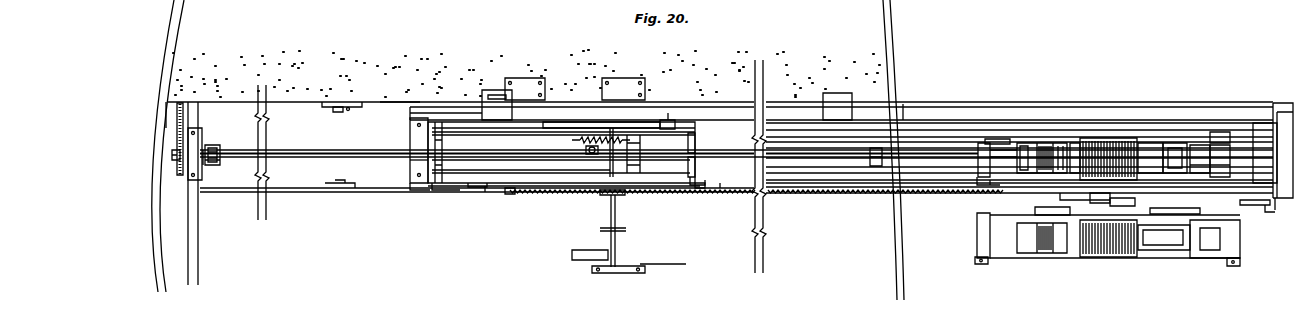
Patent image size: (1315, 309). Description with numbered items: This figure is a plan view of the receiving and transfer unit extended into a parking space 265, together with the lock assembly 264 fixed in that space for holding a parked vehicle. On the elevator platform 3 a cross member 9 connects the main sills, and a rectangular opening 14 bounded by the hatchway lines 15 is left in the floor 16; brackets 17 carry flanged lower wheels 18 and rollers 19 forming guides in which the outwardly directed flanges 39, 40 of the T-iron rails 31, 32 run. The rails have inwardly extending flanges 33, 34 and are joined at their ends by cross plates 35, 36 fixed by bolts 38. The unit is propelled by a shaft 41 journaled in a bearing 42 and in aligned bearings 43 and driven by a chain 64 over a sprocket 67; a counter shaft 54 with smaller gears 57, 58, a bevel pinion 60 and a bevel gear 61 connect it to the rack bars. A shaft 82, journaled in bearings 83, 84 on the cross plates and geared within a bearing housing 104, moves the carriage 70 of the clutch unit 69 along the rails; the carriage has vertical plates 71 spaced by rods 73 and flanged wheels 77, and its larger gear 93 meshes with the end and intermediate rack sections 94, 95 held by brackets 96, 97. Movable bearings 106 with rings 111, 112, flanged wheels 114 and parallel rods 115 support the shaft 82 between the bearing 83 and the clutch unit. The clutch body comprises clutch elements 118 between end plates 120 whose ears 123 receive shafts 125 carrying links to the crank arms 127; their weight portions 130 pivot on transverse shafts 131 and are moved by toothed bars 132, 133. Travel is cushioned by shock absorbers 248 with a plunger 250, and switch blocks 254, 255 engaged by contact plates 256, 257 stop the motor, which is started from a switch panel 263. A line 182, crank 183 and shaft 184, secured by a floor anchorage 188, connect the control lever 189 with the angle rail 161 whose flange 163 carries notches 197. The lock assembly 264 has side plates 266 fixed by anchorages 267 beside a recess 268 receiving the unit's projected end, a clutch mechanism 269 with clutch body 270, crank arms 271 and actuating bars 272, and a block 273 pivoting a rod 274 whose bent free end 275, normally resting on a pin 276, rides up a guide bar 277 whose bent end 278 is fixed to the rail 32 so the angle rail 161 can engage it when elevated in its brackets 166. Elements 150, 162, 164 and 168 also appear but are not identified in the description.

The platform 3 is at (172, 66).
The cross member 9 is at (198, 252).
The rectangularly-shaped opening 14 is at (166, 124).
The hatchway lines 15 is at (158, 252).
The floor 16 is at (397, 90).
The brackets 17 is at (330, 105).
The flanged lower wheels 18 is at (337, 112).
The rollers 19 is at (348, 112).
The T-iron rail 31 is at (468, 104).
The T-iron rail 32 is at (455, 187).
The inwardly extending flange 33 is at (485, 128).
The inwardly extending flange 34 is at (440, 190).
The cross plate 35 is at (412, 178).
The cross plate 36 is at (1270, 135).
The bolts 38 is at (1266, 120).
The outwardly directed flange 39 is at (445, 103).
The outwardly directed flange 40 is at (412, 186).
The shaft 41 is at (312, 160).
The bearing 42 is at (190, 180).
The bearings 43 is at (574, 160).
The counter shaft 54 is at (641, 166).
The smaller gear 57 is at (614, 141).
The smaller gear 58 is at (580, 141).
The bevel pinion 60 is at (593, 155).
The bevel gear 61 is at (556, 152).
The chain 64 is at (176, 150).
The sprocket 67 is at (172, 166).
The clutch unit 69 is at (1104, 138).
The carriage 70 is at (990, 139).
The plates 71 is at (1028, 146).
The rods 73 is at (980, 150).
The flanged wheels 77 is at (1225, 132).
The shaft 82 is at (476, 162).
The bearing 83 is at (413, 146).
The bearing 84 is at (1277, 150).
The gear 93 is at (1140, 143).
The end rack section 94 is at (1165, 143).
The intermediate rack section 95 is at (870, 126).
The bracket 96 is at (543, 127).
The bracket 97 is at (664, 120).
The bearing housing 104 is at (443, 139).
The movable bearings 106 is at (700, 188).
The ring 111 is at (688, 162).
The ring 112 is at (688, 142).
The flanged wheels 114 is at (690, 184).
The parallel rods 115 is at (735, 186).
The clutch elements 118 is at (1076, 143).
The end plates 120 is at (1061, 146).
The ears 123 is at (1192, 145).
The shafts 125 is at (1216, 145).
The arm 127 is at (1030, 143).
The weight portion 130 is at (990, 165).
The transverse shaft 131 is at (1010, 165).
The bar 132 is at (1080, 198).
The bar 133 is at (1120, 202).
The shaft 150 is at (1186, 172).
The angle rail 161 is at (509, 194).
The rail 162 is at (824, 190).
The flange 163 is at (845, 193).
The bracket 164 is at (490, 190).
The bracket 166 is at (483, 184).
The rail 168 is at (785, 188).
The line 182 is at (616, 203).
The crank 183 is at (610, 196).
The shaft 184 is at (616, 232).
The floor anchorage 188 is at (622, 273).
The control lever 189 is at (662, 264).
The notches 197 is at (562, 193).
The shock absorbers 248 is at (214, 147).
The plunger 250 is at (214, 165).
The switch block 254 is at (532, 84).
The switch block 255 is at (621, 80).
The contact plate 256 is at (496, 90).
The contact plate 257 is at (833, 93).
The switch panel 263 is at (592, 250).
The lock assembly 264 is at (1165, 266).
The parking space 265 is at (893, 235).
The side plates 266 is at (1045, 262).
The anchorage 267 is at (1242, 262).
The recess 268 is at (912, 106).
The clutch mechanism 269 is at (1145, 256).
The clutch body 270 is at (1122, 258).
The crank arms 271 is at (1206, 258).
The actuating bars 272 is at (1064, 256).
The block 273 is at (1035, 212).
The rod 274 is at (1100, 199).
The free end 275 is at (1246, 205).
The pin 276 is at (1198, 212).
The guide bar 277 is at (1270, 212).
The retractively bent end 278 is at (1276, 206).